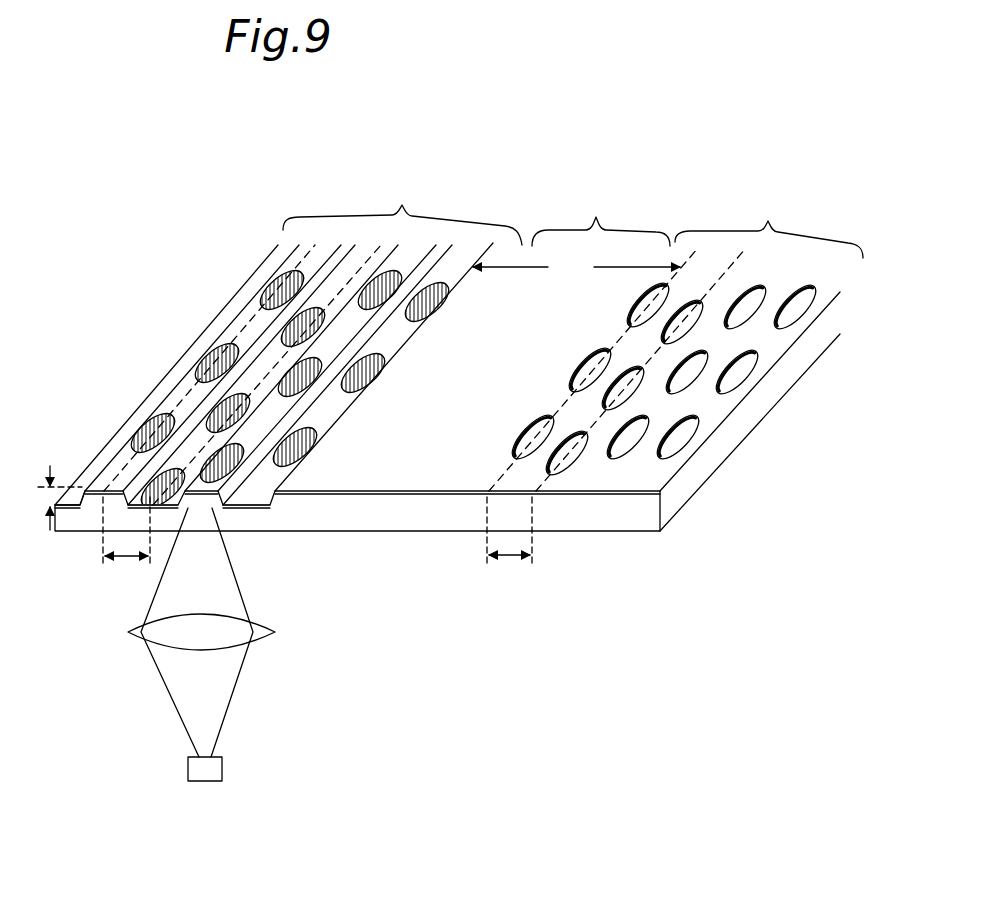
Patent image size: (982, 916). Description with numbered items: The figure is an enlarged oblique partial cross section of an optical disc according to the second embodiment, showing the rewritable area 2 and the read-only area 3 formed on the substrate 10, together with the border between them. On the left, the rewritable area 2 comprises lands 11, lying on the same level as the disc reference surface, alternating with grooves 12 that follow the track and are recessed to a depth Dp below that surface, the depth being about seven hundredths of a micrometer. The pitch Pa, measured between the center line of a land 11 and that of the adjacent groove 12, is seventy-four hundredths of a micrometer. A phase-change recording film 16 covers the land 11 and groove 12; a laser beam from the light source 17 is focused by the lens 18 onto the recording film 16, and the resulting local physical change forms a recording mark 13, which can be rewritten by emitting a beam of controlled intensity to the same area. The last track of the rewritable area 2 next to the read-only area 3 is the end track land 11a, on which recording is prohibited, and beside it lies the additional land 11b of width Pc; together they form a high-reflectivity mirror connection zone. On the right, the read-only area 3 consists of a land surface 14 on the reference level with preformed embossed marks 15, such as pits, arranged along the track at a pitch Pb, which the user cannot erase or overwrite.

The rewritable area 2 is at (402, 208).
The read-only area 3 is at (676, 340).
The substrate 10 is at (636, 532).
The land 11 is at (100, 489).
The end track land 11a is at (507, 260).
The additional land 11b is at (601, 216).
The groove 12 is at (197, 440).
The recording mark 13 is at (273, 290).
The land surface 14 is at (715, 403).
The embossed mark 15 is at (680, 440).
The phase-change recording film 16 is at (82, 503).
The light source 17 is at (188, 768).
The lens 18 is at (262, 636).
The depth Dp is at (60, 485).
The pitch Pa is at (126, 545).
The pitch Pb is at (509, 546).
The width Pc is at (576, 268).